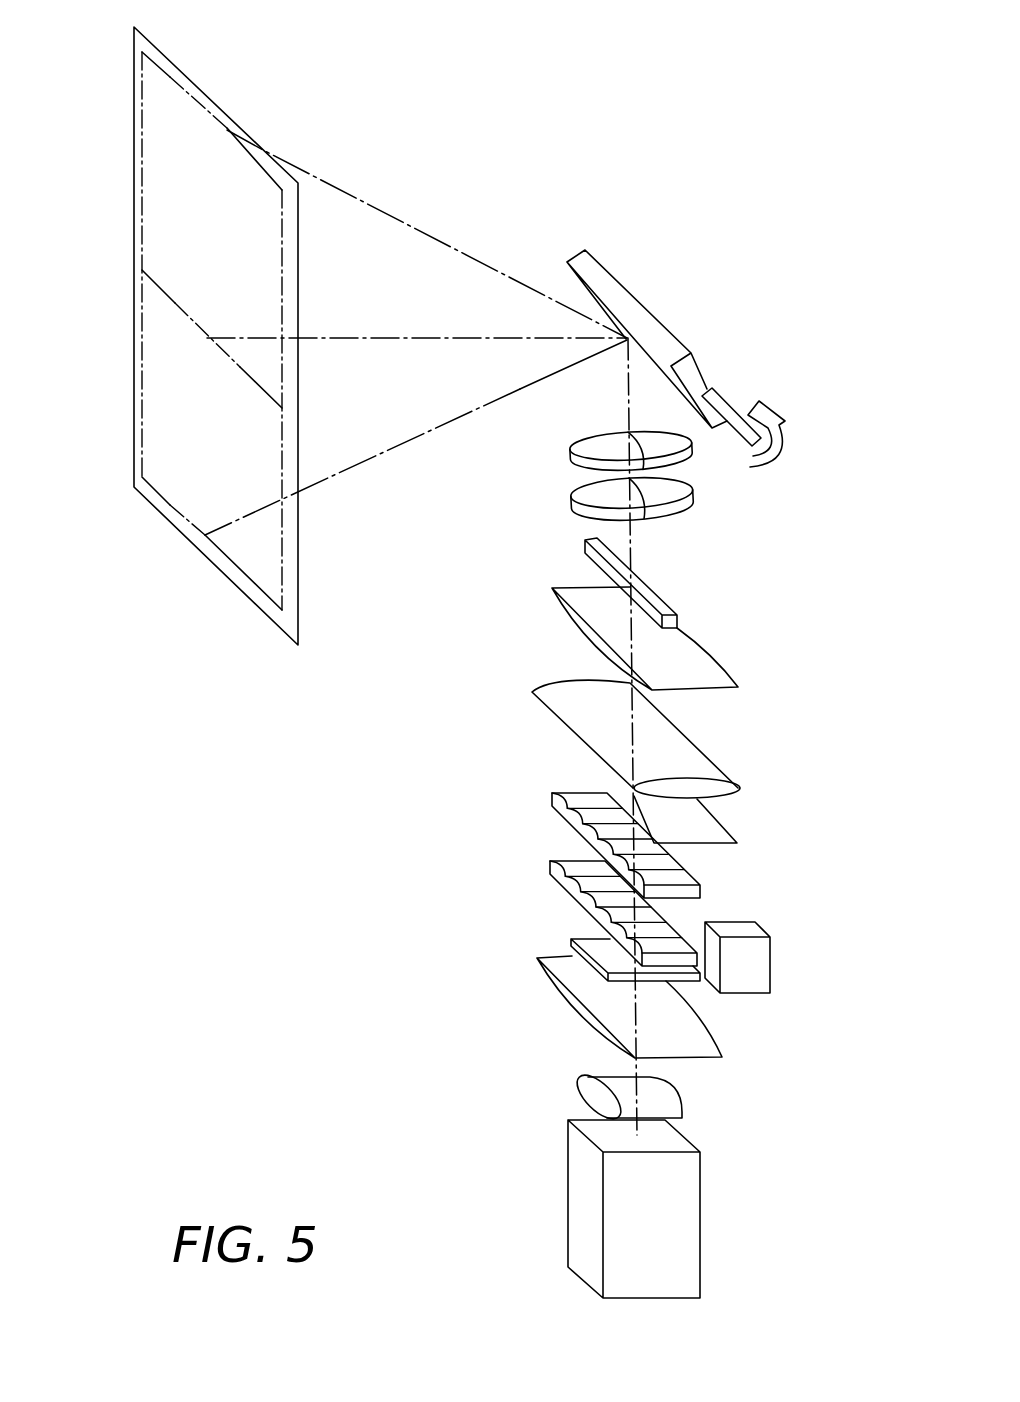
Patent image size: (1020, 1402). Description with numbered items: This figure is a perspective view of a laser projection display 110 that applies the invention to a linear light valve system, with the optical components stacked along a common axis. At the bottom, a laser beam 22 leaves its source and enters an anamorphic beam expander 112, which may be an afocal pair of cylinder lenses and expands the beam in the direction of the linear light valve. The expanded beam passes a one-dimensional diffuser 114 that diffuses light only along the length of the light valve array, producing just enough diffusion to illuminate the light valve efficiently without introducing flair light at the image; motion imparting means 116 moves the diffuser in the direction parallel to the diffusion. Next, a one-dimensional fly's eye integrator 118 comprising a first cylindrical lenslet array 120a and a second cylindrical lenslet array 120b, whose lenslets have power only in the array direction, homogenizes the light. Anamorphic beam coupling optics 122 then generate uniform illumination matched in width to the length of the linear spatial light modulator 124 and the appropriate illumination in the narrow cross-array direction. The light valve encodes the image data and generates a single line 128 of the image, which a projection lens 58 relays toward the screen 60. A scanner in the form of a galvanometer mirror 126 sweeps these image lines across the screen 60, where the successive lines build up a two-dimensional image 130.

The laser projection display 110 is at (598, 97).
The two-dimensional image 130 is at (176, 130).
The single line of the image 128 is at (180, 310).
The screen 60 is at (173, 527).
The galvanometer mirror 126 is at (648, 310).
The projection lens 58 is at (557, 443).
The linear spatial light modulator 124 is at (647, 585).
The anamorphic beam coupling optics 122 is at (511, 597).
The one-dimensional fly's eye integrator 118 is at (526, 803).
The second cylindrical lenslet array 120b is at (670, 867).
The first cylindrical lenslet array 120a is at (673, 930).
The one-dimensional diffuser 114 is at (571, 939).
The motion imparting means 116 is at (753, 965).
The anamorphic beam expander 112 is at (529, 960).
The laser beam 22 is at (660, 1101).